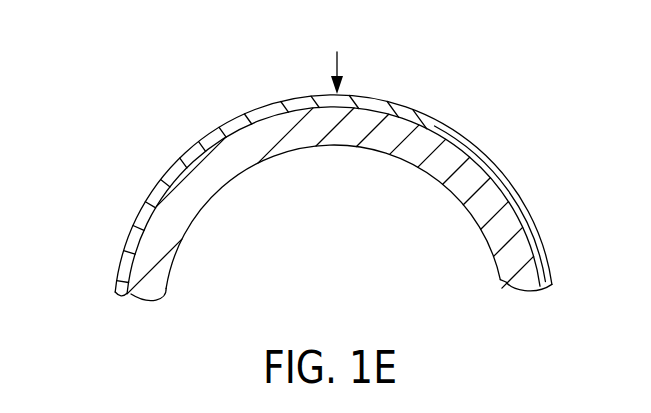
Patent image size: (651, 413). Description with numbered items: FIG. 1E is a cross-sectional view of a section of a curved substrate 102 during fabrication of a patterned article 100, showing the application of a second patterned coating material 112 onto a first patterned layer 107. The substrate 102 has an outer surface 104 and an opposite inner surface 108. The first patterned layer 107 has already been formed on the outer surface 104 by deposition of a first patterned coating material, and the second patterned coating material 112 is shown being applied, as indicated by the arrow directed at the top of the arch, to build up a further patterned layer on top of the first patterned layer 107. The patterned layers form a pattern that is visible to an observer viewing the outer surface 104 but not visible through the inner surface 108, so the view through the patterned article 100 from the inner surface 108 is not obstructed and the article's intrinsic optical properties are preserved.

The patterned article 100 is at (146, 48).
The substrate 102 is at (148, 200).
The outer surface 104 is at (463, 138).
The patterned layer 107 is at (211, 137).
The inner surface 108 is at (311, 148).
The second patterned coating material 112 is at (345, 63).